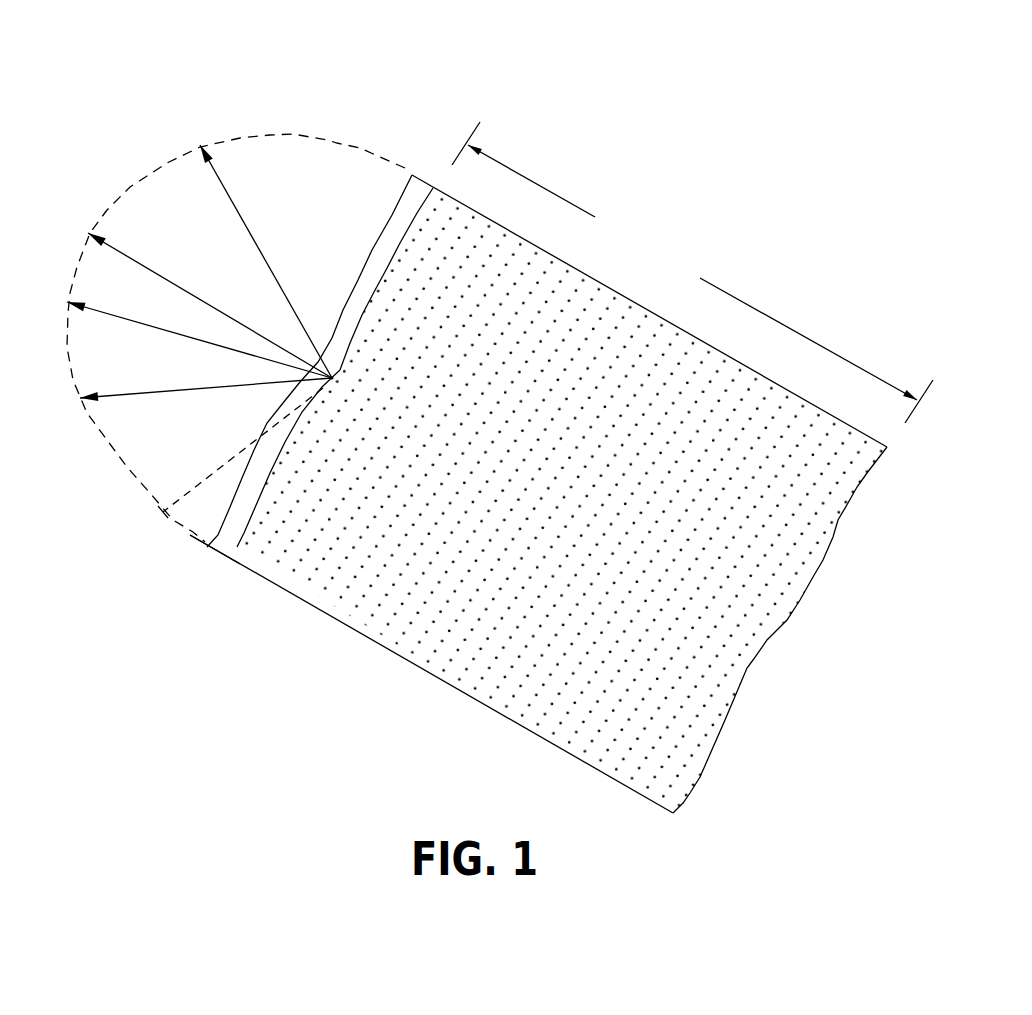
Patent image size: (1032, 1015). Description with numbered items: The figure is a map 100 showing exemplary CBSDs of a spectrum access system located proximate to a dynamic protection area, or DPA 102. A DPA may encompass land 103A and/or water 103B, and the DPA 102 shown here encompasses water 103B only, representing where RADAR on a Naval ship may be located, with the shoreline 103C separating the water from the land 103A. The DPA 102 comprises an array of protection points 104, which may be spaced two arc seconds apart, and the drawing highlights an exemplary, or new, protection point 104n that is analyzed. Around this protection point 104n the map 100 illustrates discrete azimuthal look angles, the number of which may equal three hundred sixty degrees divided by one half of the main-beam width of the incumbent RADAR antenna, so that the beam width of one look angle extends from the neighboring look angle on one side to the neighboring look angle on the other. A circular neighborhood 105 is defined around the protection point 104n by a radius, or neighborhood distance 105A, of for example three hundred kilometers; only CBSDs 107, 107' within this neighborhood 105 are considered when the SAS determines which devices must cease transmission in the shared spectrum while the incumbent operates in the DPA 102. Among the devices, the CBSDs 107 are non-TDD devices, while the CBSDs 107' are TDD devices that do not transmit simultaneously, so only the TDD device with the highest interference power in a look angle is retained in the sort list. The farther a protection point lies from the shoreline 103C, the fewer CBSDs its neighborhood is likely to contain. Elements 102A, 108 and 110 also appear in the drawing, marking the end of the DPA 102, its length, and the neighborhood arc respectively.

The map 100 is at (493, 33).
The dynamic protection area (DPA) 102 is at (682, 617).
The end of DPA 102A is at (230, 541).
The land 103A is at (328, 224).
The water 103B is at (485, 349).
The shoreline 103C is at (403, 188).
The array of protection points 104 is at (771, 390).
The protection point 104n is at (336, 381).
The neighborhood 105 is at (195, 209).
The neighborhood distance 105A is at (178, 501).
The CBSDs 107 is at (199, 286).
The TDD CBSDs 107' is at (144, 338).
The length of DPA 108 is at (692, 272).
The scan arc 110 is at (362, 145).